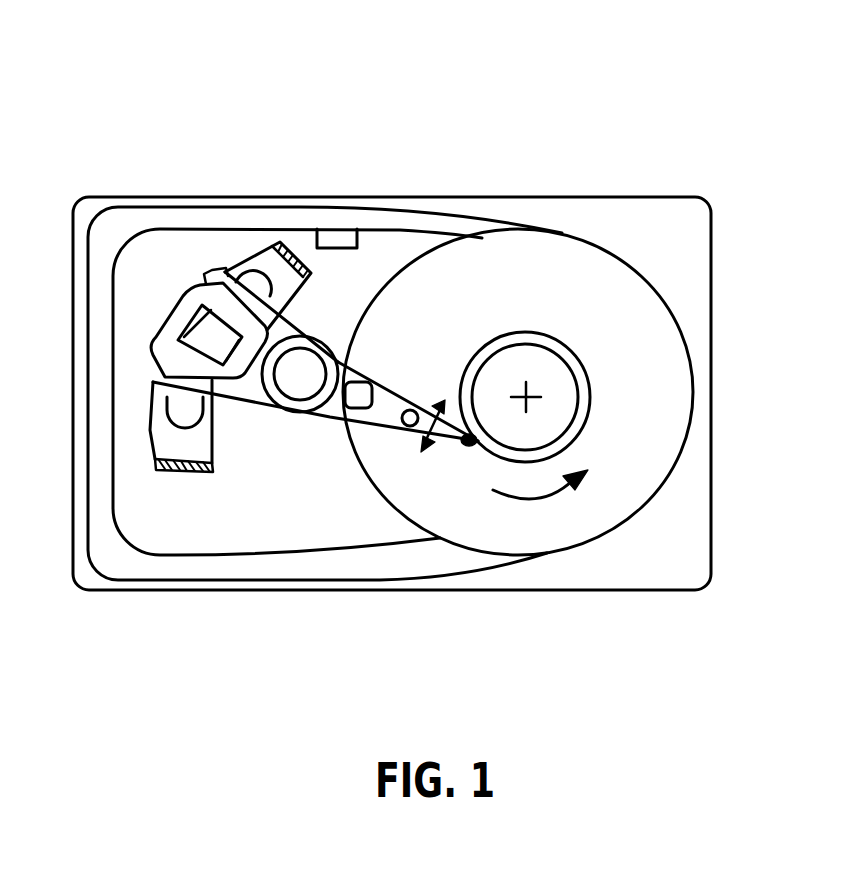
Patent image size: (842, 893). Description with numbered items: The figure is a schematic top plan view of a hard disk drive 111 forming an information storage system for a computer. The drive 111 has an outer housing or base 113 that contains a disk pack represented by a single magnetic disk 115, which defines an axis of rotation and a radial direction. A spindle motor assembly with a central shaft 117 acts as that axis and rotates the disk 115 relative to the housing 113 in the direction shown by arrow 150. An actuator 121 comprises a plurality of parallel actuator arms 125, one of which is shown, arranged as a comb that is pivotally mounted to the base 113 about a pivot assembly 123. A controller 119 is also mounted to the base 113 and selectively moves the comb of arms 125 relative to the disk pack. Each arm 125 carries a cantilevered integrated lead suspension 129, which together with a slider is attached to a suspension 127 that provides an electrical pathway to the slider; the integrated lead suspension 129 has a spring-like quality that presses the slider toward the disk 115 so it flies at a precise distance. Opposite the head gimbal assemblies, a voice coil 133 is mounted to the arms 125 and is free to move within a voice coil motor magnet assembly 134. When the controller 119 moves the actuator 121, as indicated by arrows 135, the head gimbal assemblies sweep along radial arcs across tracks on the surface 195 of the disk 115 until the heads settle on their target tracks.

The hard disk drive 111 is at (693, 117).
The outer housing or base 113 is at (600, 197).
The magnetic disk 115 is at (617, 258).
The central shaft 117 is at (552, 337).
The controller 119 is at (340, 248).
The actuator 121 is at (229, 468).
The pivot assembly 123 is at (288, 403).
The actuator arm 125 is at (352, 358).
The suspension 127 is at (392, 391).
The integrated lead suspension 129 is at (466, 444).
The voice coil 133 is at (180, 297).
The voice coil motor magnet assembly 134 is at (262, 265).
The actuator movement arrows 135 is at (412, 448).
The rotation direction arrow 150 is at (538, 500).
The disk surface 195 is at (655, 428).